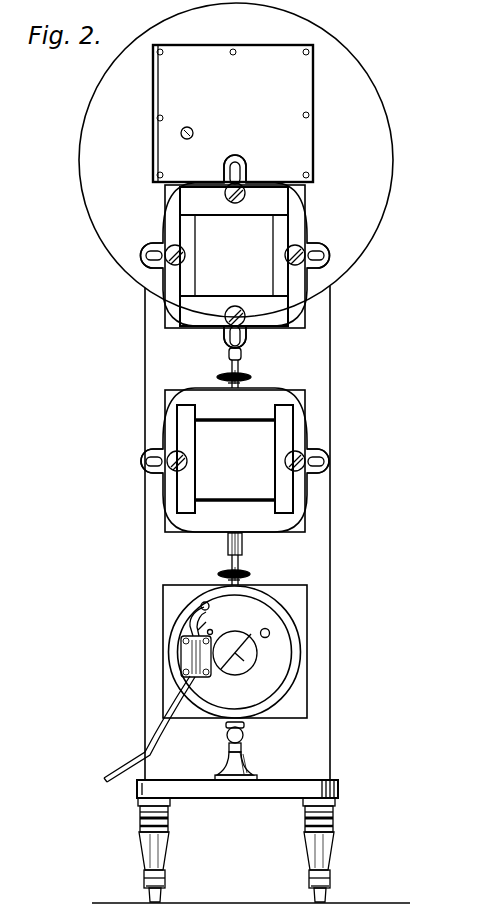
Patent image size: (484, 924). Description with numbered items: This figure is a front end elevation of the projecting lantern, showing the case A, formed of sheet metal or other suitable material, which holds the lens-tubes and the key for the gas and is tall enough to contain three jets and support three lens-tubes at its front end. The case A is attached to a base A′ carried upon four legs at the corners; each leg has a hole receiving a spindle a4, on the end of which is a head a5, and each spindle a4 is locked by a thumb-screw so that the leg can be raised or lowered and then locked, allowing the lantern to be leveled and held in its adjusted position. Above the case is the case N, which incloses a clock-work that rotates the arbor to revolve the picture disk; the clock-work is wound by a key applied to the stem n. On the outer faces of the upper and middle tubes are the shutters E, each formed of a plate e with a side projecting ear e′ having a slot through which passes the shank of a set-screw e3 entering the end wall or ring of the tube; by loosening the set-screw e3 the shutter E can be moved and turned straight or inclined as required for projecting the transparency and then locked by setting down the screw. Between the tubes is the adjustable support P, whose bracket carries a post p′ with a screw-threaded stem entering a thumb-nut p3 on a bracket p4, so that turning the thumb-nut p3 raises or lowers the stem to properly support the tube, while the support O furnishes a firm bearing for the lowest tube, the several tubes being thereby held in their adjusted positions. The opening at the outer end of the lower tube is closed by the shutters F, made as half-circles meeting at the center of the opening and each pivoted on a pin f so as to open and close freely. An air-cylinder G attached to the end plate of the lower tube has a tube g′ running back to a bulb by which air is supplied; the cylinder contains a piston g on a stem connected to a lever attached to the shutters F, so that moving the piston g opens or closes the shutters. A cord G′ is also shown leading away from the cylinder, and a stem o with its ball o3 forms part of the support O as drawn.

The case N is at (233, 113).
The stem n is at (192, 129).
The case A is at (223, 482).
The shutters E is at (187, 277).
The plate e is at (234, 350).
The side projecting ear e′ is at (246, 172).
The set-screw e3 is at (235, 203).
The adjustable support P is at (247, 465).
The post p′ is at (229, 354).
The thumb-nut p3 is at (250, 375).
The bracket p4 is at (252, 381).
The shutters F is at (235, 652).
The air-cylinder G is at (182, 650).
The conductor cord G′ is at (149, 729).
The piston g is at (215, 632).
The tube g′ is at (208, 623).
The pin or pivot f is at (270, 634).
The support O is at (239, 760).
The stem o is at (228, 765).
The ball o3 is at (230, 740).
The base A′ is at (237, 802).
The spindle a4 is at (150, 888).
The head a5 is at (165, 895).